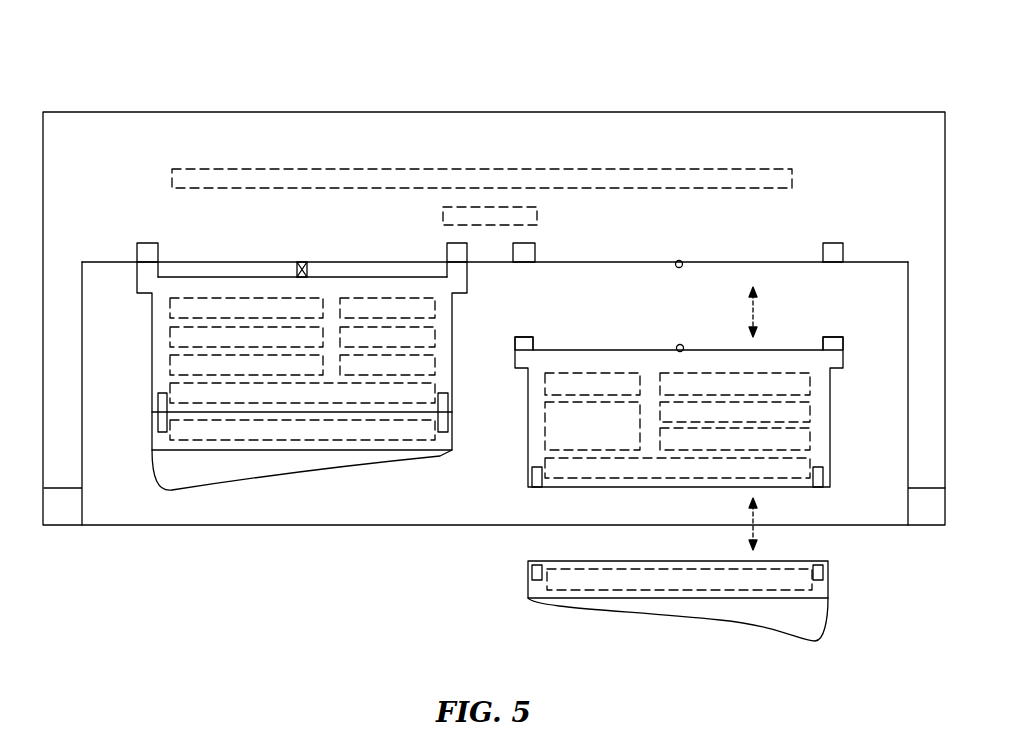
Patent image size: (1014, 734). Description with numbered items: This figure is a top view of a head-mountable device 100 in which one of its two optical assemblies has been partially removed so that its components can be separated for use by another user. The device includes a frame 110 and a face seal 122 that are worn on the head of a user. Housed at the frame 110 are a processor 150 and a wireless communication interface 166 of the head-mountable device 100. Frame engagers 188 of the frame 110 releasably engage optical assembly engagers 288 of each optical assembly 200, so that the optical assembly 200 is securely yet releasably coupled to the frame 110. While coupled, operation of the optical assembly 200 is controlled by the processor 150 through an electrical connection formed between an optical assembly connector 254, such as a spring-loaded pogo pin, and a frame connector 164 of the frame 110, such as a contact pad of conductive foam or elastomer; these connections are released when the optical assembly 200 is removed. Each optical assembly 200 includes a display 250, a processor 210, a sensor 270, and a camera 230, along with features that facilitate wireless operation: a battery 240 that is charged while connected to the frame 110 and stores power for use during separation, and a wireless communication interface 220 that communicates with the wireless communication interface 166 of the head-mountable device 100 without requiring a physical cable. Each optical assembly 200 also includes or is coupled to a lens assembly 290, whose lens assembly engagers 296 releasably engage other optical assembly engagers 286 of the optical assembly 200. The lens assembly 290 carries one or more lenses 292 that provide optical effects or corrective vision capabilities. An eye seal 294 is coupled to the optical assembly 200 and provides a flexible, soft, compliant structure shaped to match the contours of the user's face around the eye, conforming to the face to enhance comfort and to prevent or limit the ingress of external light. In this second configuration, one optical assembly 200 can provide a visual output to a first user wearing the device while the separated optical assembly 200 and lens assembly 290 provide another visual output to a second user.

The head-mountable device 100 is at (119, 67).
The frame 110 is at (248, 143).
The face seal 122 is at (82, 507).
The processor 150 is at (488, 168).
The frame connector 164 is at (682, 266).
The wireless communication interface 166 is at (537, 208).
The frame engager 188 is at (513, 262).
The optical assembly 200 is at (152, 320).
The processor 210 is at (810, 410).
The wireless communication interface 220 is at (545, 374).
The camera 230 is at (810, 380).
The battery 240 is at (545, 424).
The display 250 is at (810, 464).
The optical assembly connector 254 is at (678, 347).
The sensor 270 is at (810, 438).
The optical assembly engager 286 is at (532, 484).
The optical assembly engager 288 is at (515, 343).
The lens assembly 290 is at (158, 414).
The lens 292 is at (781, 571).
The eye seal 294 is at (712, 622).
The lens assembly engager 296 is at (528, 566).